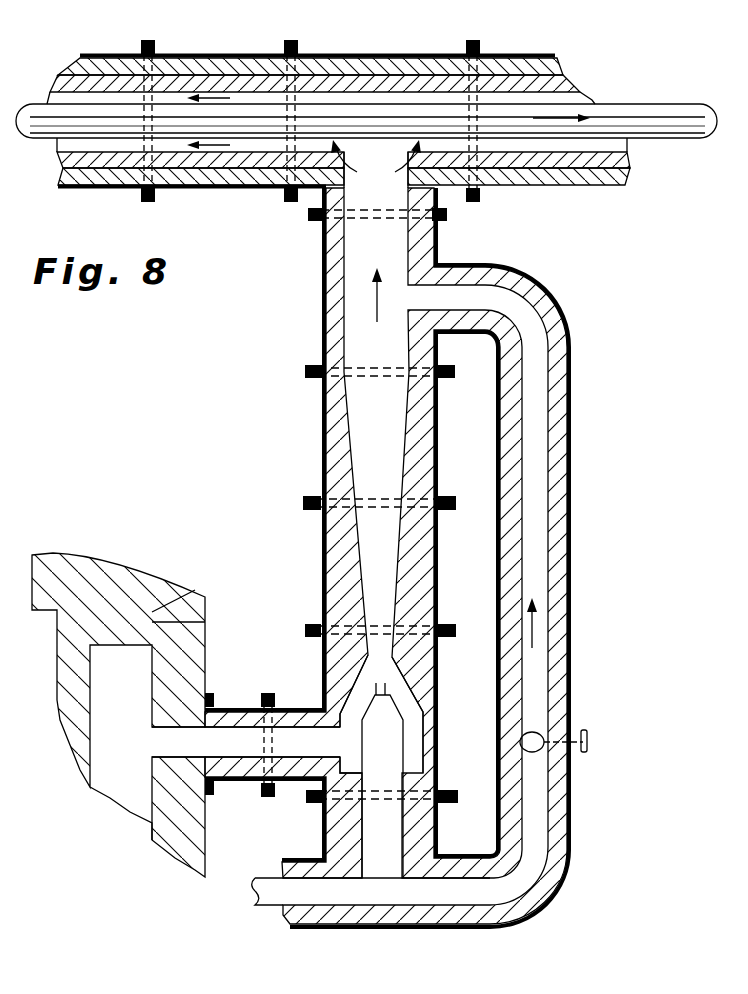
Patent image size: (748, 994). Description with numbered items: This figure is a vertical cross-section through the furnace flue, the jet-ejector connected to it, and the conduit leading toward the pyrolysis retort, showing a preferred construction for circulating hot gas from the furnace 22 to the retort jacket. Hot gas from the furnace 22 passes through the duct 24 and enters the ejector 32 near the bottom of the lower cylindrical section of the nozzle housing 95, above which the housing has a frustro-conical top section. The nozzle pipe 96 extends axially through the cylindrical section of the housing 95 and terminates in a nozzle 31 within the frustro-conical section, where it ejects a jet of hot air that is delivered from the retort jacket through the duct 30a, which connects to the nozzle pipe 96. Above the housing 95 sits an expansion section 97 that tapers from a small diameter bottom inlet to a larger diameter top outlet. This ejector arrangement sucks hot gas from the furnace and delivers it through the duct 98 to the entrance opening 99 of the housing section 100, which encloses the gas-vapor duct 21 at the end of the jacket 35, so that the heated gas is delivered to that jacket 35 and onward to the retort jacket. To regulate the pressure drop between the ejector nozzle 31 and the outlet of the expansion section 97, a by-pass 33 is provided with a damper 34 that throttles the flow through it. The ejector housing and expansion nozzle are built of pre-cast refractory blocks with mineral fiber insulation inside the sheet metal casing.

The housing section 100 is at (412, 53).
The gas-vapor duct 21 is at (678, 102).
The jacket 35 is at (317, 96).
The entrance opening 99 is at (320, 221).
The duct 98 is at (375, 326).
The expansion section 97 is at (378, 482).
The by-pass 33 is at (533, 473).
The ejector 32 is at (440, 738).
The duct 24 is at (215, 740).
The furnace 22 is at (128, 710).
The nozzle housing 95 is at (350, 713).
The nozzle pipe 96 is at (382, 755).
The nozzle 31 is at (386, 684).
The damper 34 is at (542, 733).
The duct 30a is at (294, 896).